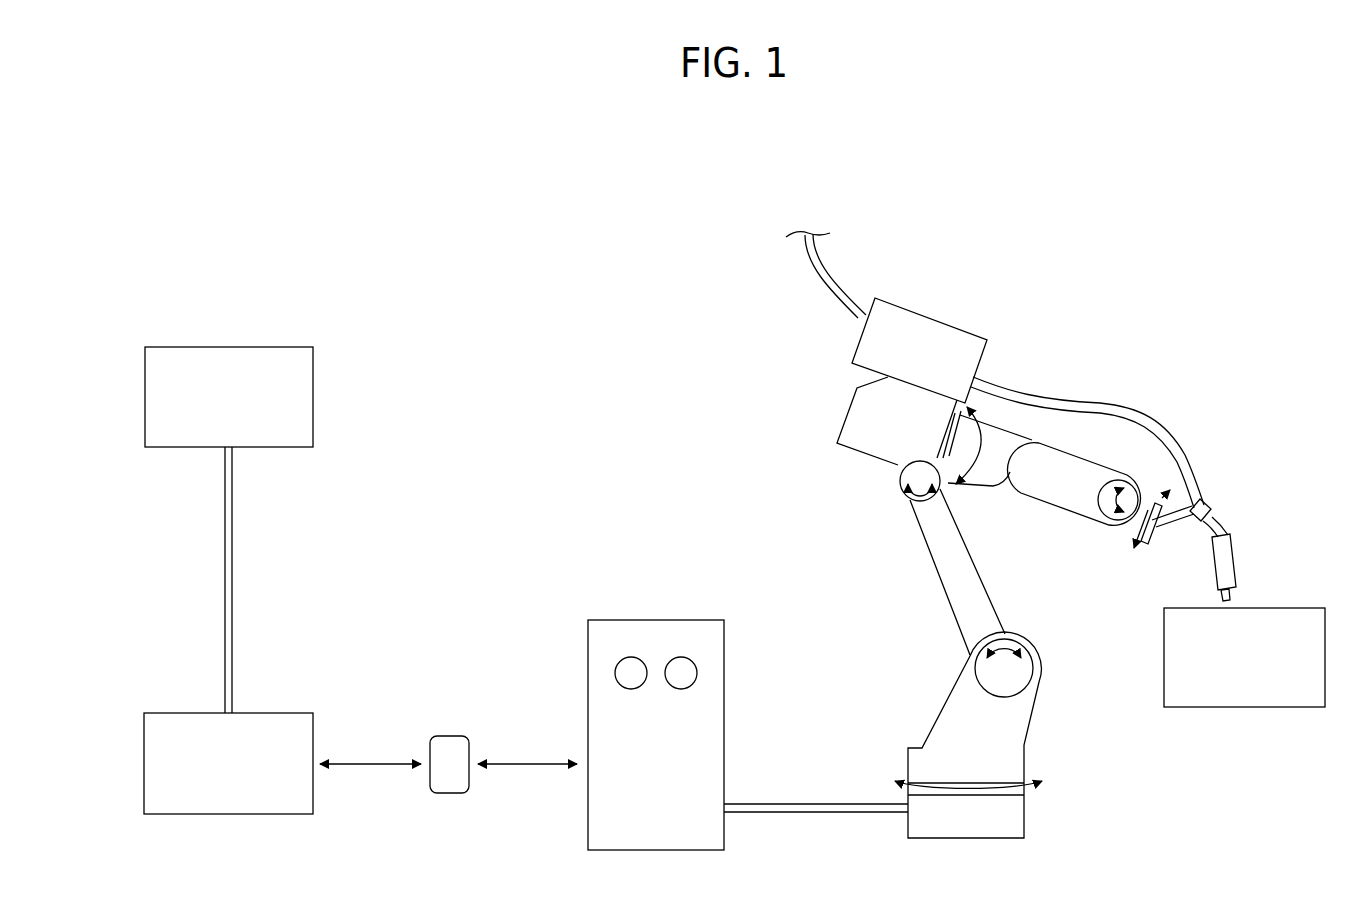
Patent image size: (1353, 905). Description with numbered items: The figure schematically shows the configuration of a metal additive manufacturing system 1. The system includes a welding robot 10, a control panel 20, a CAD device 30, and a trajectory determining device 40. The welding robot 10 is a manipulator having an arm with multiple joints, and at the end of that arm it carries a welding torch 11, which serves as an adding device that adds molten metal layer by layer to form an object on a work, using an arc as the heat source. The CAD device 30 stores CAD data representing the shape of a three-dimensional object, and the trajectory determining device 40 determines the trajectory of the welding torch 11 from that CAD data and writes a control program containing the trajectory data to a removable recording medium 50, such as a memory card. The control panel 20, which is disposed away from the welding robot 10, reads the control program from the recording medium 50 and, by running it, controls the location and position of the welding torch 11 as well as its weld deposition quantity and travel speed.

The metal additive manufacturing system 1 is at (724, 182).
The welding robot 10 is at (848, 408).
The welding torch 11 is at (1238, 557).
The control panel 20 is at (657, 620).
The CAD device 30 is at (178, 346).
The trajectory determining device 40 is at (172, 713).
The recording medium 50 is at (447, 736).